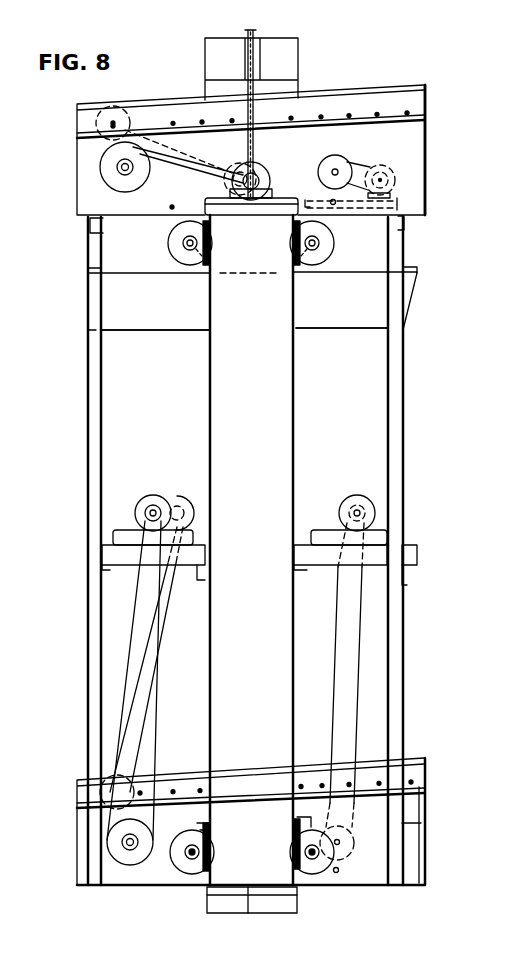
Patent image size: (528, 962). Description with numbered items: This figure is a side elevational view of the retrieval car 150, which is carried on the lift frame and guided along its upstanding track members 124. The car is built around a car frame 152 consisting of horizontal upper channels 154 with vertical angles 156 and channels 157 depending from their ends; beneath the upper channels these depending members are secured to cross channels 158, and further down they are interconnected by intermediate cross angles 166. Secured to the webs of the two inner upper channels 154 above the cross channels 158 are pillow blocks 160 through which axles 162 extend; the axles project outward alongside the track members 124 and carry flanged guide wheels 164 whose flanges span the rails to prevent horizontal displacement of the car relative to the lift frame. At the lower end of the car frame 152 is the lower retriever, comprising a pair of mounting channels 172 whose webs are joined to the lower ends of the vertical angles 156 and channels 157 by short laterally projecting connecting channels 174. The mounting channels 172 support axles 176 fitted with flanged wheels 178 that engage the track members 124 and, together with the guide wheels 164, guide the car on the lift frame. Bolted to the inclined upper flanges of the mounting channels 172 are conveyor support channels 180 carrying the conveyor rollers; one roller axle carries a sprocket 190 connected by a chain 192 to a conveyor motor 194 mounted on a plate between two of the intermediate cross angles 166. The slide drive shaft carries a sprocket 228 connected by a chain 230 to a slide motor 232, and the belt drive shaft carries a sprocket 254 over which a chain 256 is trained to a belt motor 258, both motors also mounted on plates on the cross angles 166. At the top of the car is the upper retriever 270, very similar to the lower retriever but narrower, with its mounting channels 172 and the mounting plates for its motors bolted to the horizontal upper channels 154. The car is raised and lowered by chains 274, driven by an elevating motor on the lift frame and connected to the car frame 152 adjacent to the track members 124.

The upstanding track member 124 is at (300, 52).
The retrieval car 150 is at (421, 447).
The car frame 152 is at (88, 495).
The horizontal upper channel 154 is at (86, 249).
The vertical angle 156 is at (104, 394).
The channel 157 is at (266, 403).
The cross channel 158 is at (166, 325).
The pillow block 160 is at (291, 238).
The axle 162 is at (335, 240).
The flanged guide wheel 164 is at (183, 257).
The intermediate cross angle 166 is at (213, 570).
The mounting channel 172 is at (77, 160).
The connecting channel 174 is at (212, 817).
The axle 176 is at (203, 853).
The flanged wheel 178 is at (188, 867).
The conveyor support channel 180 is at (77, 122).
The sprocket 190 is at (117, 112).
The chain 192 is at (167, 610).
The conveyor motor 194 is at (241, 168).
The sprocket 228 is at (344, 853).
The chain 230 is at (339, 638).
The slide motor 232 is at (396, 182).
The sprocket 254 is at (108, 178).
The chain 256 is at (157, 723).
The belt motor 258 is at (268, 172).
The upper retriever 270 is at (428, 143).
The chain 274 is at (255, 138).